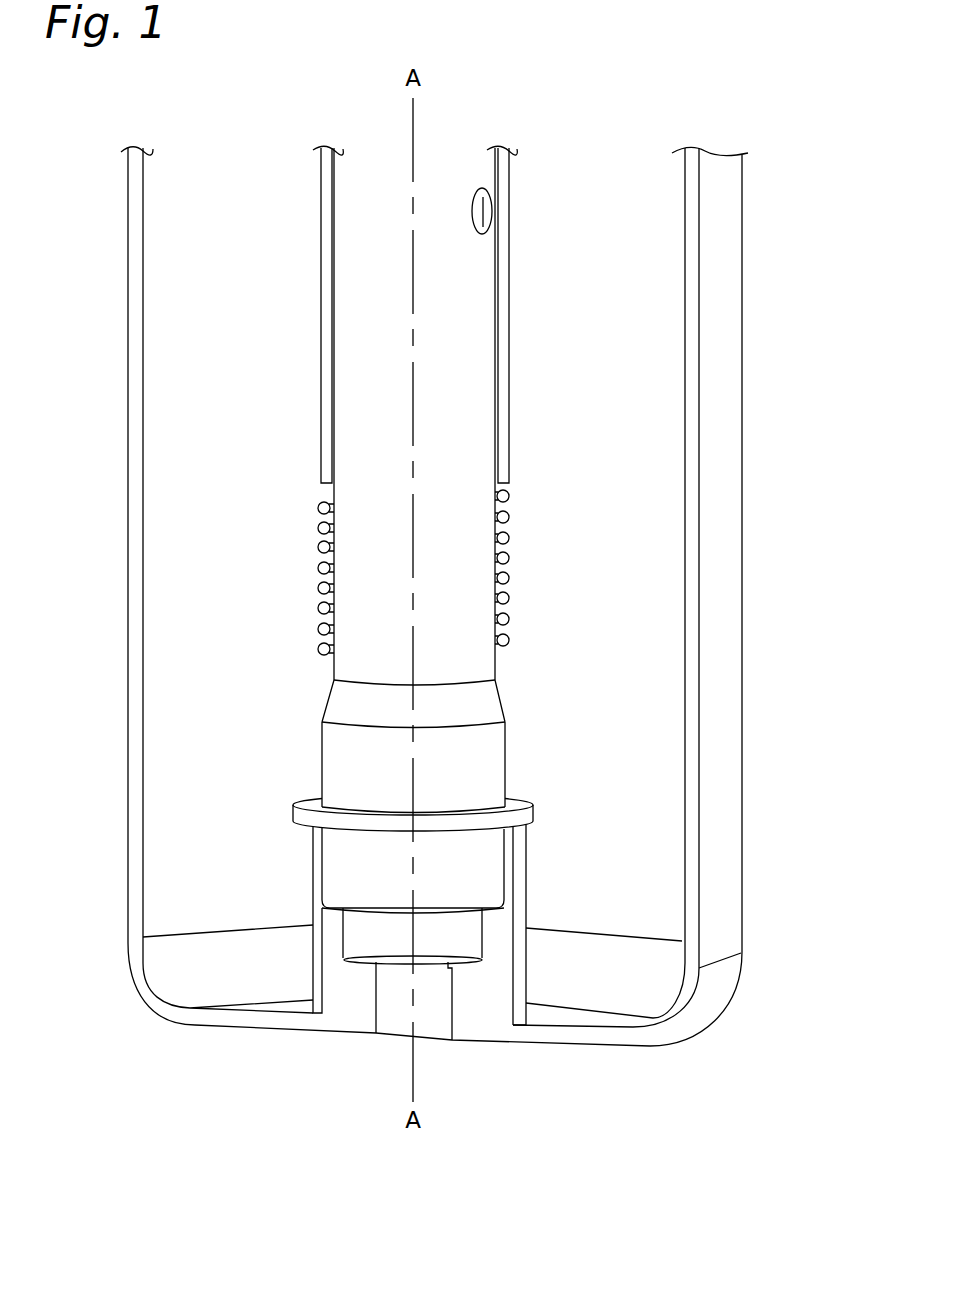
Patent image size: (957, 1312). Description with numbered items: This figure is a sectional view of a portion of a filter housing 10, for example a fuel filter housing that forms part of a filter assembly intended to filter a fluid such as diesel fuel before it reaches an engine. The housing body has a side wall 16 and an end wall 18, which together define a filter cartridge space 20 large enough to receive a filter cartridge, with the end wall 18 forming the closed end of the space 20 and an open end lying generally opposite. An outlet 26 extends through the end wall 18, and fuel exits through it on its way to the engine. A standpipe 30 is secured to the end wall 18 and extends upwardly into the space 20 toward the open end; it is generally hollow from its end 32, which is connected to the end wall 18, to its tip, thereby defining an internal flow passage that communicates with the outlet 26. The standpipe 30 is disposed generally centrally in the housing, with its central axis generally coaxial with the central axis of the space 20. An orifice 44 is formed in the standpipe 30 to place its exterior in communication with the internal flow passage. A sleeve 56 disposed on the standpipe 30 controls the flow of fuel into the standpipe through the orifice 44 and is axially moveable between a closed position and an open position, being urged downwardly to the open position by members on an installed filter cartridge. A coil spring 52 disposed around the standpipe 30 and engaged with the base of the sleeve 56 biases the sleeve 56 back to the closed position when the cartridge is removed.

The filter housing 10 is at (119, 680).
The side wall 16 is at (727, 703).
The end wall 18 is at (237, 1017).
The filter cartridge space 20 is at (603, 709).
The outlet 26 is at (398, 1023).
The standpipe 30 is at (457, 567).
The end of standpipe 32 is at (520, 912).
The orifice 44 is at (487, 213).
The coil spring 52 is at (508, 518).
The sleeve 56 is at (503, 322).